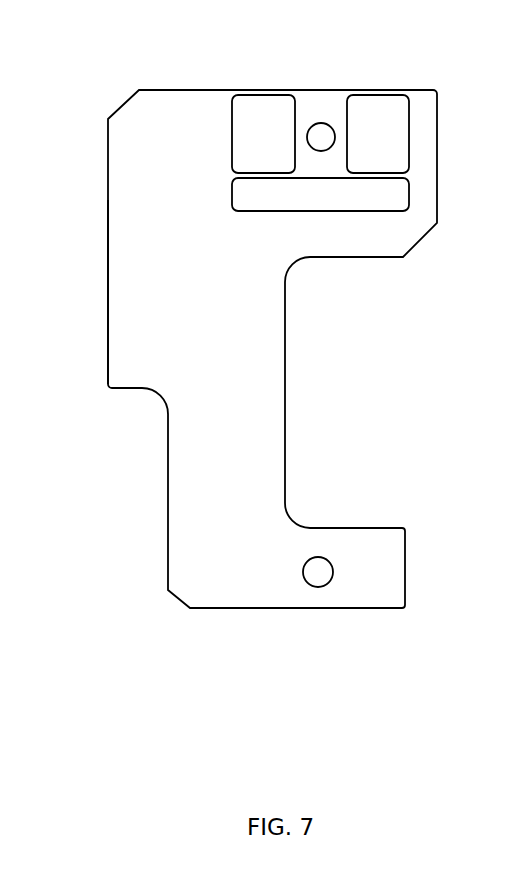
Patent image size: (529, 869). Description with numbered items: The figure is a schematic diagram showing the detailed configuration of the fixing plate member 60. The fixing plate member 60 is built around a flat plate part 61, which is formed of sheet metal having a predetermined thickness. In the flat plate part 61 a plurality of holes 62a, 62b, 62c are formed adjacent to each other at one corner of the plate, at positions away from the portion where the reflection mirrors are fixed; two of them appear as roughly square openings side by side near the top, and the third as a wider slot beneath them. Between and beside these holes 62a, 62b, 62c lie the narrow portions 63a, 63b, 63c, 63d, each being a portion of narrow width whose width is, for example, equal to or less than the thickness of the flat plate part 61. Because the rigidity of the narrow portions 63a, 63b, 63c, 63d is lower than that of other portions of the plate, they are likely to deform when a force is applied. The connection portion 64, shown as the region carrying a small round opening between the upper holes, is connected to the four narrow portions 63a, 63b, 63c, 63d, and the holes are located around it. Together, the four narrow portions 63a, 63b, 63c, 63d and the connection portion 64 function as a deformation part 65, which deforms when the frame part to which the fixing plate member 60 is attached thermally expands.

The fixing plate member 60 is at (106, 208).
The flat plate part 61 is at (115, 305).
The hole 62a is at (232, 136).
The hole 62b is at (410, 137).
The hole 62c is at (321, 179).
The narrow portion 63a is at (265, 90).
The narrow portion 63b is at (265, 175).
The narrow portion 63c is at (380, 90).
The narrow portion 63d is at (376, 175).
The connection portion 64 is at (337, 108).
The deformation part 65 is at (296, 89).